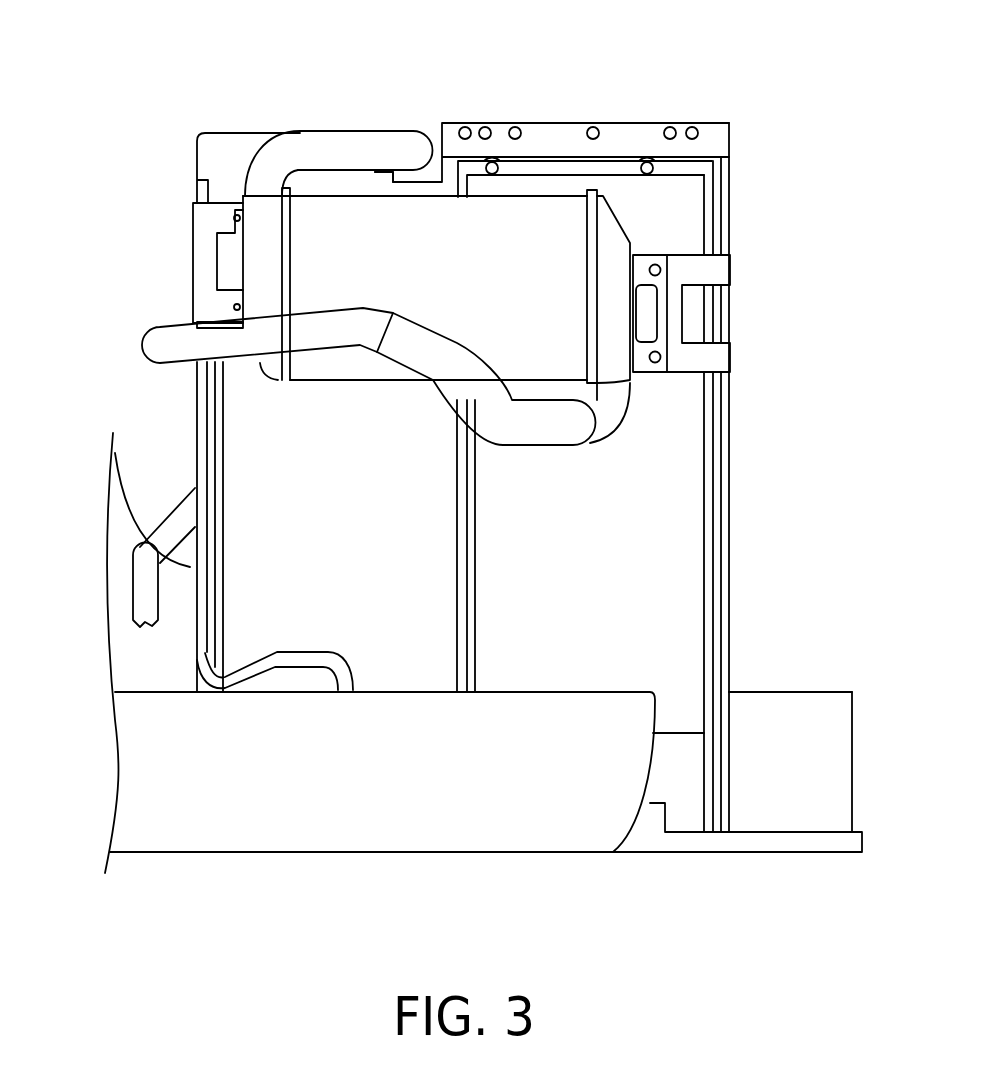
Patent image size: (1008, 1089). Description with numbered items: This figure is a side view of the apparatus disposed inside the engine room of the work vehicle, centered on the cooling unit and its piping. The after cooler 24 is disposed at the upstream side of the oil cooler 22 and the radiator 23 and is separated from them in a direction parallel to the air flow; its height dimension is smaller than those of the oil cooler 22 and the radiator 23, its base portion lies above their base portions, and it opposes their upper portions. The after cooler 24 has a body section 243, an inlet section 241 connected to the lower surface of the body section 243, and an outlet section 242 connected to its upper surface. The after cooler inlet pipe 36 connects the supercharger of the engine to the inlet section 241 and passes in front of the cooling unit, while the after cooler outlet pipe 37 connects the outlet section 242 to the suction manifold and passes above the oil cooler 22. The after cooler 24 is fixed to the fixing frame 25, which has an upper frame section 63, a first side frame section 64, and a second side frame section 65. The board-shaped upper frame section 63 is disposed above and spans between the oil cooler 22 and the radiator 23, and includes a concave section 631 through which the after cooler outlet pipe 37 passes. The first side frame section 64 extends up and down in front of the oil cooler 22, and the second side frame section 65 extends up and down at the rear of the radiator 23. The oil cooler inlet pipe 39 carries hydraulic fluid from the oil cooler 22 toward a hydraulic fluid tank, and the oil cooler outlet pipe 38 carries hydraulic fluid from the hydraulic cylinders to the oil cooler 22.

The oil cooler 22 is at (248, 413).
The radiator 23 is at (692, 472).
The after cooler 24 is at (561, 248).
The inlet section 241 is at (613, 407).
The outlet section 242 is at (270, 170).
The body section 243 is at (500, 235).
The fixing frame 25 is at (758, 169).
The after cooler inlet pipe 36 is at (158, 346).
The after cooler outlet pipe 37 is at (333, 142).
The oil cooler outlet pipe 38 is at (143, 573).
The oil cooler inlet pipe 39 is at (207, 680).
The upper frame section 63 is at (530, 130).
The concave section 631 is at (402, 169).
The first side frame section 64 is at (197, 448).
The second side frame section 65 is at (730, 548).